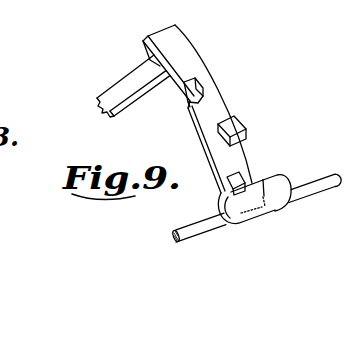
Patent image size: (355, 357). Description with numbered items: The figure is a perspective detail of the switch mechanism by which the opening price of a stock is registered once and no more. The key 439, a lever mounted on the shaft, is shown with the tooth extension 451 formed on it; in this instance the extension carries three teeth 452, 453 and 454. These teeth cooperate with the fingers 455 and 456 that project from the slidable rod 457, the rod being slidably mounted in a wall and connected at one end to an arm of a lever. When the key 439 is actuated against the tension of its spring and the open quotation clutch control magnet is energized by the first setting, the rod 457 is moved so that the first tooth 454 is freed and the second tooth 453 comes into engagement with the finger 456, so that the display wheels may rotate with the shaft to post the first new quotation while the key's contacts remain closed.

The key 439 is at (118, 83).
The tooth extension 451 is at (194, 53).
The tooth 452 is at (199, 90).
The second tooth 453 is at (233, 124).
The first tooth 454 is at (238, 182).
The finger 455 is at (250, 196).
The finger 456 is at (279, 175).
The slidable rod 457 is at (196, 234).